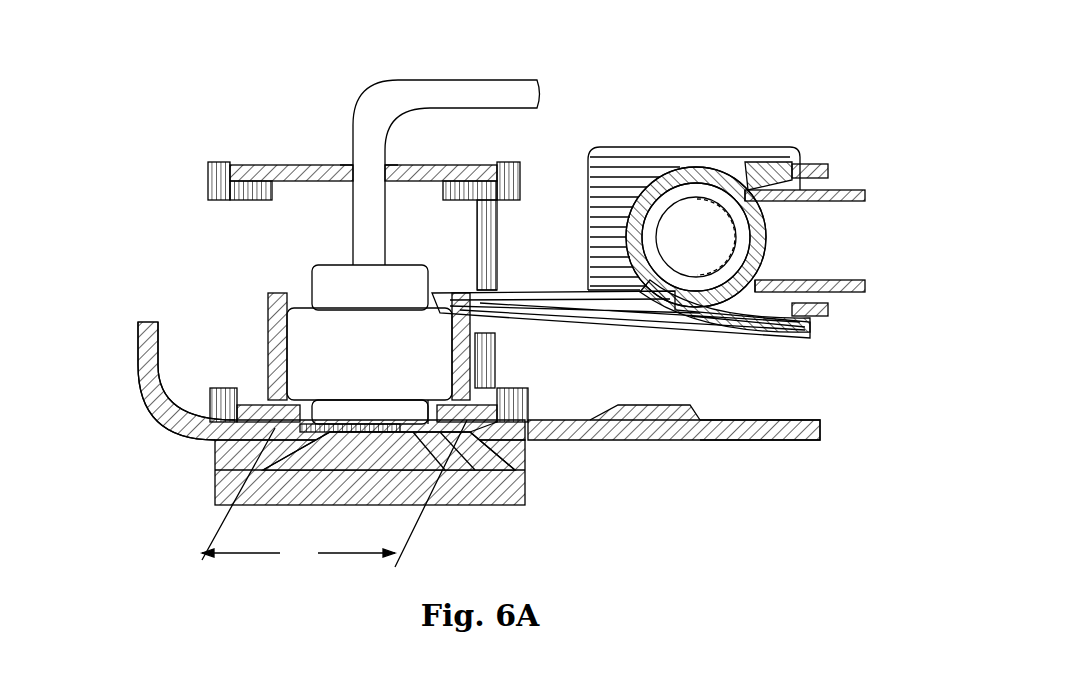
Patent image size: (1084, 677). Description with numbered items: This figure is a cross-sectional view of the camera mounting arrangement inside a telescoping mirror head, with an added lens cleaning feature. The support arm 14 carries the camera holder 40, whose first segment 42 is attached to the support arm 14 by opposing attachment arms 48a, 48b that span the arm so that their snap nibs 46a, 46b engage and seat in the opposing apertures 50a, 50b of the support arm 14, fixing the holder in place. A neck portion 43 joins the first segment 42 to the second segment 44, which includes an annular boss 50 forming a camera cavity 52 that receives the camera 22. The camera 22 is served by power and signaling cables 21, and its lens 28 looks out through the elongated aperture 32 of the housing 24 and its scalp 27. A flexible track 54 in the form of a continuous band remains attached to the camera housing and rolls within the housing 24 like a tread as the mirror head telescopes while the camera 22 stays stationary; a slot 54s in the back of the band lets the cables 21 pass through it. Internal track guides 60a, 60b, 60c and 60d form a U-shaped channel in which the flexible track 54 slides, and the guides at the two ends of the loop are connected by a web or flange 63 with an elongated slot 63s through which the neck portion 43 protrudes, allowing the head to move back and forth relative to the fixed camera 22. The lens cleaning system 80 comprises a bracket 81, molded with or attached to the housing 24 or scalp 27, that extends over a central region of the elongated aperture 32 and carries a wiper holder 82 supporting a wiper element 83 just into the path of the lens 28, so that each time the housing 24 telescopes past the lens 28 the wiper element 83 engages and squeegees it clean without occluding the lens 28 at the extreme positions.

The support arm 14 is at (805, 164).
The power and signaling cables 21 is at (465, 92).
The camera 22 is at (382, 348).
The housing 24 is at (730, 442).
The scalp 27 is at (160, 422).
The lens 28 is at (375, 425).
The aperture 32 is at (334, 493).
The camera holder 40 is at (690, 147).
The first segment 42 is at (648, 147).
The neck portion 43 is at (550, 312).
The second segment 44 is at (268, 340).
The snap nib 46a is at (828, 188).
The snap nib 46b is at (832, 298).
The attachment arm 48a is at (738, 148).
The attachment arm 48b is at (753, 333).
The annular boss 50 is at (268, 357).
The aperture 50a is at (770, 172).
The aperture 50b is at (767, 317).
The camera cavity 52 is at (444, 397).
The flexible track 54 is at (288, 165).
The slot 54s is at (351, 165).
The track guide 60a is at (208, 406).
The track guide 60b is at (528, 400).
The track guide 60c is at (206, 180).
The track guide 60d is at (518, 162).
The web or flange 63 is at (500, 232).
The elongated slot 63s is at (500, 302).
The lens cleaning system 80 is at (534, 503).
The bracket 81 is at (330, 492).
The wiper holder 82 is at (368, 450).
The wiper element 83 is at (478, 405).